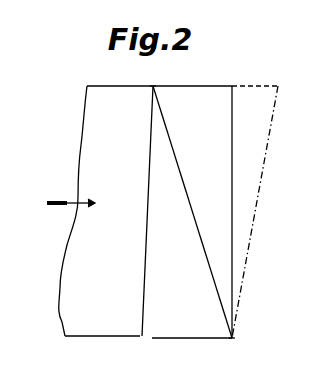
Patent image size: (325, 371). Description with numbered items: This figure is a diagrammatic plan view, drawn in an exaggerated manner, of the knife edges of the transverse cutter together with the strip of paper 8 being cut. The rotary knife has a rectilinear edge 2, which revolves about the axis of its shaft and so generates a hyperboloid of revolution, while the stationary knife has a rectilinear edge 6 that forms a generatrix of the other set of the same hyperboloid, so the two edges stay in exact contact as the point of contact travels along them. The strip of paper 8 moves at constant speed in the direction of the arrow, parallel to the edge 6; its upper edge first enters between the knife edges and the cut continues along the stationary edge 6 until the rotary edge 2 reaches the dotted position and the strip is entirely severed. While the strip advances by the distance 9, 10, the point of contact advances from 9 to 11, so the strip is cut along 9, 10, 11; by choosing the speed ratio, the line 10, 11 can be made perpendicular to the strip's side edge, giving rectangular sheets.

The rectilinear edge 2 is at (148, 213).
The rectilinear edge 6 is at (182, 174).
The strip of paper 8 is at (70, 253).
The point 9 is at (153, 86).
The point 10 is at (234, 83).
The point 11 is at (232, 338).